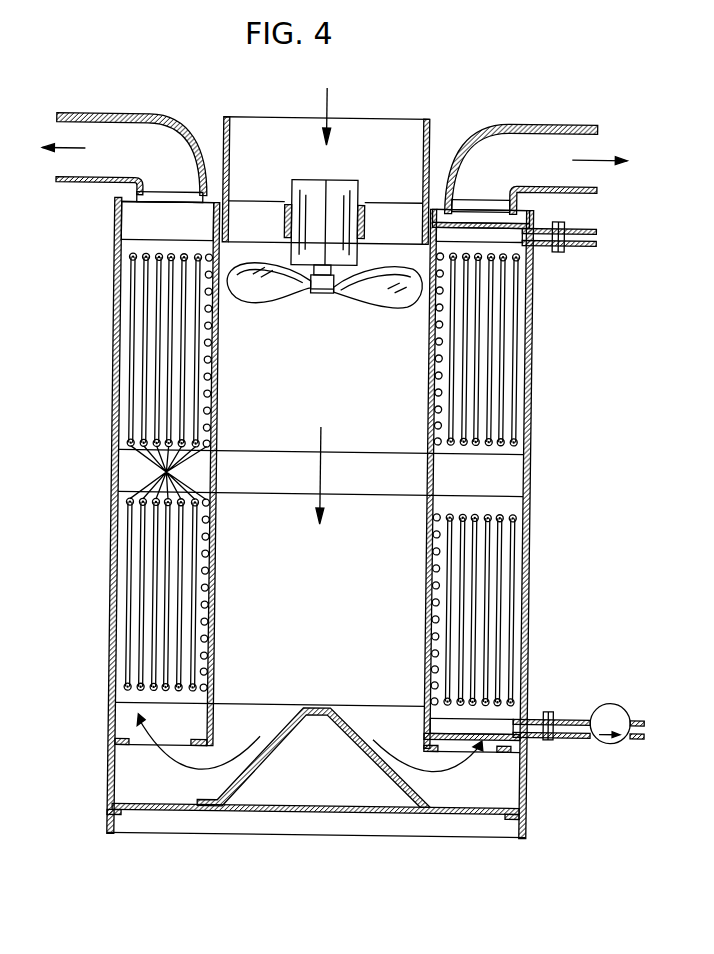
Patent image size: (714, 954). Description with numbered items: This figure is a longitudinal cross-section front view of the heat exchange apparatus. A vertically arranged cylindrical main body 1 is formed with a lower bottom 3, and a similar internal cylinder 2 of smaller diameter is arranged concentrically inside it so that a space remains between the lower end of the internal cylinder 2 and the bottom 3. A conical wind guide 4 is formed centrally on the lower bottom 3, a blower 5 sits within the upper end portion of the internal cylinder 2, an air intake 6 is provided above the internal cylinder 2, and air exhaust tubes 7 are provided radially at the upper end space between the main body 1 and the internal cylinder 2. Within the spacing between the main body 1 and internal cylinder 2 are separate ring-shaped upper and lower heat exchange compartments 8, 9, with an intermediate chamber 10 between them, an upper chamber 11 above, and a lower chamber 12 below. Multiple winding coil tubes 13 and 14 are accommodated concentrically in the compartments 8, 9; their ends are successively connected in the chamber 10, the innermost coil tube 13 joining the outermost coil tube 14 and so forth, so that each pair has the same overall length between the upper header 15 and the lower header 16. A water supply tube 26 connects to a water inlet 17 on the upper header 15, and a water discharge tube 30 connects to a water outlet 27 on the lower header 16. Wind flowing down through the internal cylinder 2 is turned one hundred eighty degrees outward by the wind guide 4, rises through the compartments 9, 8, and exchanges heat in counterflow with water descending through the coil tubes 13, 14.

The main body 1 is at (113, 421).
The internal cylinder 2 is at (220, 405).
The lower bottom 3 is at (440, 811).
The conical wind guide 4 is at (287, 722).
The blower 5 is at (334, 192).
The air intake 6 is at (363, 131).
The air exhaust tubes 7 is at (114, 130).
The upper heat exchange compartment 8 is at (300, 350).
The lower heat exchange compartment 9 is at (293, 601).
The intermediate chamber 10 is at (128, 474).
The upper chamber 11 is at (127, 226).
The lower chamber 12 is at (122, 729).
The upper coil tubes 13 is at (152, 381).
The lower coil tubes 14 is at (142, 627).
The upper header 15 is at (470, 212).
The lower header 16 is at (480, 750).
The water inlet 17 is at (546, 228).
The water supply tube 26 is at (583, 229).
The water outlet 27 is at (535, 713).
The water discharge tube 30 is at (572, 734).